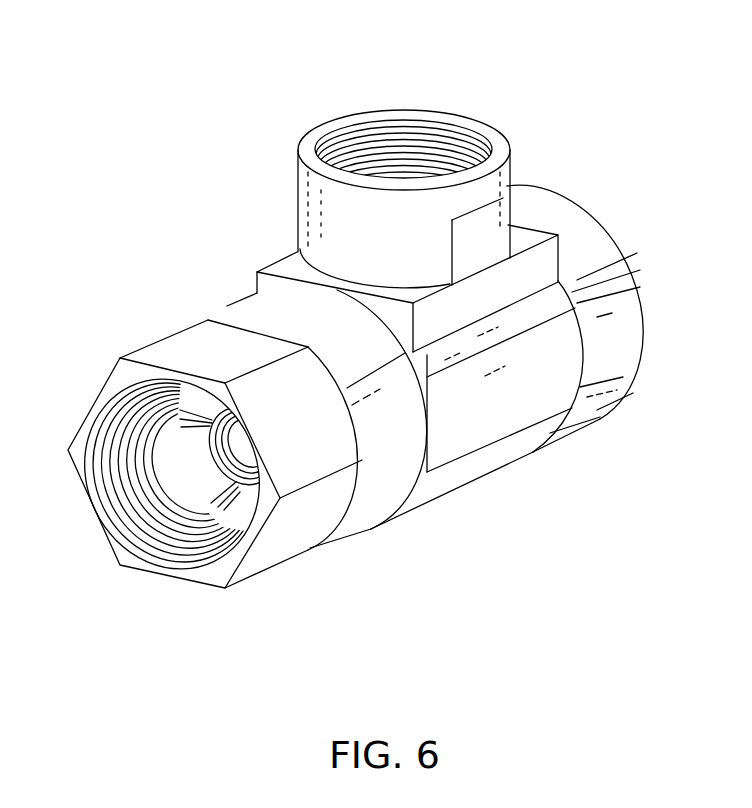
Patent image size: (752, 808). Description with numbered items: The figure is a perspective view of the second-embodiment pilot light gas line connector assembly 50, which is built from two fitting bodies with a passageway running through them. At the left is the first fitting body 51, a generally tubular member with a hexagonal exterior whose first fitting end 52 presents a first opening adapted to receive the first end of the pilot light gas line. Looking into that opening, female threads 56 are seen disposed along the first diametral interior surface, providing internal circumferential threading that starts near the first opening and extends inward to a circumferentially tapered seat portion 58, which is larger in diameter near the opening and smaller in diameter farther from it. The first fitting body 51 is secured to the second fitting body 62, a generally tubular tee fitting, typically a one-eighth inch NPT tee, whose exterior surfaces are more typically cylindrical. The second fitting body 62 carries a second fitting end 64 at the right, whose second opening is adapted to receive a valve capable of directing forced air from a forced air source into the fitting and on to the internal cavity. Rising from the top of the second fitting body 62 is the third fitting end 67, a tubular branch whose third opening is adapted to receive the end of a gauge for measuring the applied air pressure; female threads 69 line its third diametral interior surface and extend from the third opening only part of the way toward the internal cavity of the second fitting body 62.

The pilot light gas line connector assembly 50 is at (375, 333).
The first fitting body 51 is at (183, 357).
The first fitting end 52 is at (84, 533).
The female threads 56 is at (133, 452).
The circumferentially tapered seat portion 58 is at (233, 503).
The second fitting body 62 is at (487, 437).
The second fitting end 64 is at (660, 312).
The third fitting end 67 is at (356, 84).
The female threads 69 is at (442, 139).